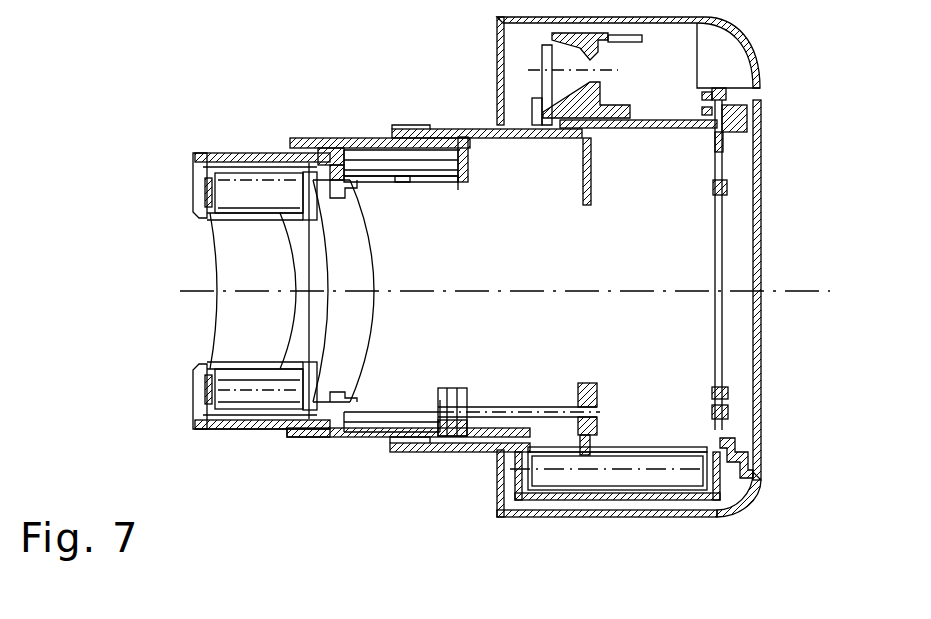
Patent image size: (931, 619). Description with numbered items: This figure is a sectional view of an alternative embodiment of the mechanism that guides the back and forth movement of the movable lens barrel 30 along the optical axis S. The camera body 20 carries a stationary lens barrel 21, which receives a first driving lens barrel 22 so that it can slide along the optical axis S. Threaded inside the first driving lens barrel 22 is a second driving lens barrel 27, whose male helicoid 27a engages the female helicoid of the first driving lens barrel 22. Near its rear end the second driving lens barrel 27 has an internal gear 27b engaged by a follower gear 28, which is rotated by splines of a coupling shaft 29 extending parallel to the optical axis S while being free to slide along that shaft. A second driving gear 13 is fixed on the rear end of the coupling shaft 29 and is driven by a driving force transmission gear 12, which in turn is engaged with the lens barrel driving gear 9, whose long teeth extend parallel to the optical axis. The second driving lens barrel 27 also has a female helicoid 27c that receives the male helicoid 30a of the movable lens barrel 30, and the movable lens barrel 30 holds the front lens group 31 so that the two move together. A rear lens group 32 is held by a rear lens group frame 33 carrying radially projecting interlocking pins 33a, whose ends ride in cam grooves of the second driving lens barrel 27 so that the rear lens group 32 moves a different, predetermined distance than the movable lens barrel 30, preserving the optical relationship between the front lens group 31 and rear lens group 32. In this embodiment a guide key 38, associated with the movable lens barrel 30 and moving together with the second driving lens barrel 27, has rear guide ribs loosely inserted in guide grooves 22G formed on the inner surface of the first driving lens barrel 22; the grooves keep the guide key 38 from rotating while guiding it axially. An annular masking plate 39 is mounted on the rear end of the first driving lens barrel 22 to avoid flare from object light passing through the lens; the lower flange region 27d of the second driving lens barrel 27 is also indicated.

The lens barrel driving gear 9 is at (623, 478).
The driving force transmission gear 12 is at (597, 423).
The second driving gear 13 is at (583, 385).
The camera body 20 is at (763, 160).
The stationary lens barrel 21 is at (660, 128).
The first driving lens barrel 22 is at (478, 128).
The guide grooves 22G is at (533, 130).
The second driving lens barrel 27 is at (368, 138).
The male helicoid 27a is at (437, 128).
The internal gear 27b is at (438, 183).
The female helicoid 27c is at (372, 437).
The barrel lower flange 27d is at (470, 402).
The follower gear 28 is at (443, 390).
The coupling shaft 29 is at (528, 407).
The movable lens barrel 30 is at (247, 152).
The male helicoid 30a is at (322, 438).
The front lens group 31 is at (228, 254).
The rear lens group 32 is at (358, 316).
The rear lens group frame 33 is at (363, 180).
The interlocking pins 33a is at (322, 138).
The guide key 38 is at (408, 180).
The annular masking plate 39 is at (592, 175).
The optical axis S is at (194, 293).